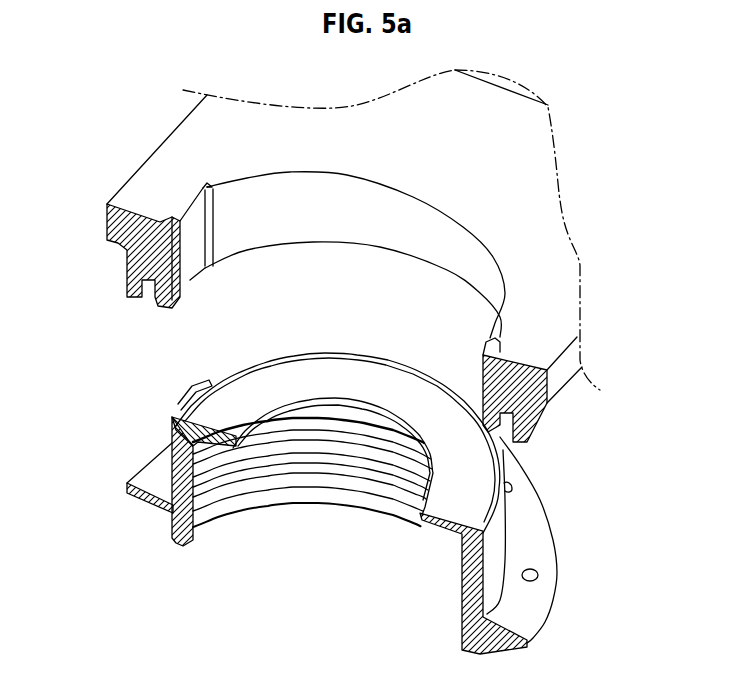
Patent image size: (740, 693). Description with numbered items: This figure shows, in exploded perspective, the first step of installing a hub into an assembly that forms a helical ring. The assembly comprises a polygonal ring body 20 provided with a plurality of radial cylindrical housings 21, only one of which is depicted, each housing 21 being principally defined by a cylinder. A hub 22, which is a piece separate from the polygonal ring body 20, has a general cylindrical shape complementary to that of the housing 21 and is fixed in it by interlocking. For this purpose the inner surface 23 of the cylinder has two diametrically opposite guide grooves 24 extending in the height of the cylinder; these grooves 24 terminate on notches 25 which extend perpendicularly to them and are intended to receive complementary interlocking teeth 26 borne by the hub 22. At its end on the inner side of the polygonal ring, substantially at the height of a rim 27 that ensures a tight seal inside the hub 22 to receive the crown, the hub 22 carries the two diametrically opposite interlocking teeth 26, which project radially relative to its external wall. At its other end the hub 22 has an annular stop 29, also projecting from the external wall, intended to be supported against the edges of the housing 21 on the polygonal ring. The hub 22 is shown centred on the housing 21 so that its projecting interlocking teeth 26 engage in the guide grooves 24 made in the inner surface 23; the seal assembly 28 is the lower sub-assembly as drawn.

The polygonal ring body 20 is at (178, 150).
The radial cylindrical housing 21 is at (320, 310).
The hub 22 is at (177, 528).
The inner surface 23 is at (398, 227).
The guide groove 24 is at (198, 251).
The notch 25 is at (183, 200).
The interlocking tooth 26 is at (192, 392).
The rim 27 is at (462, 482).
The seal assembly 28 is at (328, 528).
The annular stop 29 is at (143, 502).